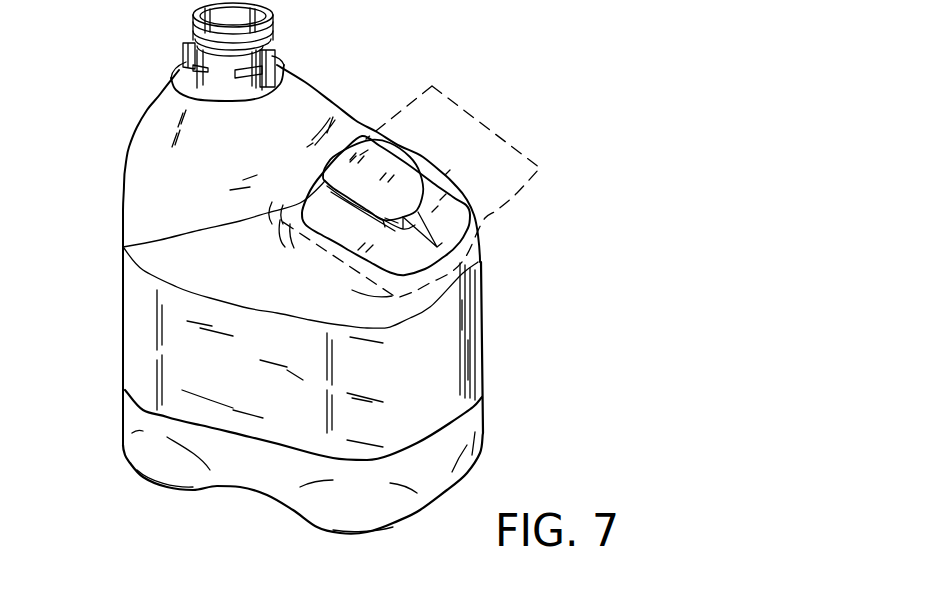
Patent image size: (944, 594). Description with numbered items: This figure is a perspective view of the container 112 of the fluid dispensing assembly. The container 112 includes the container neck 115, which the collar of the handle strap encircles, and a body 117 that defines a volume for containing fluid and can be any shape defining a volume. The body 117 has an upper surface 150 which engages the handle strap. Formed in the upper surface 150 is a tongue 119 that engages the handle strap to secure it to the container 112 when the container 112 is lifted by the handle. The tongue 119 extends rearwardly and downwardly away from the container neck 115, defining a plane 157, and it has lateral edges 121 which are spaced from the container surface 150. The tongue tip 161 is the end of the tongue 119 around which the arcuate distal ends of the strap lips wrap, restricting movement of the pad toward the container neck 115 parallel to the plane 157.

The container 112 is at (488, 385).
The container neck 115 is at (268, 40).
The body 117 is at (463, 303).
The tongue 119 is at (380, 172).
The lateral edges 121 is at (123, 247).
The upper surface 150 is at (440, 206).
The plane 157 is at (433, 86).
The tongue tip 161 is at (410, 223).